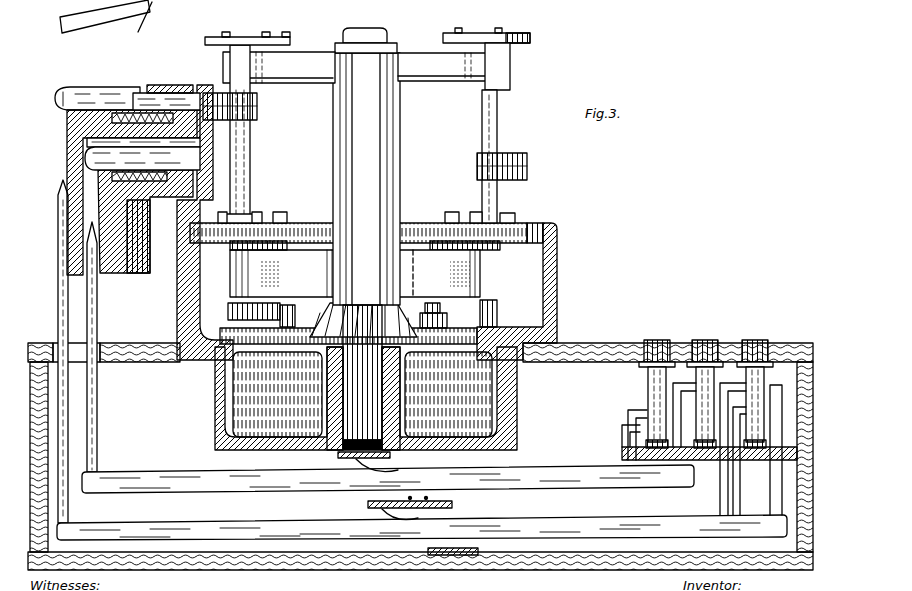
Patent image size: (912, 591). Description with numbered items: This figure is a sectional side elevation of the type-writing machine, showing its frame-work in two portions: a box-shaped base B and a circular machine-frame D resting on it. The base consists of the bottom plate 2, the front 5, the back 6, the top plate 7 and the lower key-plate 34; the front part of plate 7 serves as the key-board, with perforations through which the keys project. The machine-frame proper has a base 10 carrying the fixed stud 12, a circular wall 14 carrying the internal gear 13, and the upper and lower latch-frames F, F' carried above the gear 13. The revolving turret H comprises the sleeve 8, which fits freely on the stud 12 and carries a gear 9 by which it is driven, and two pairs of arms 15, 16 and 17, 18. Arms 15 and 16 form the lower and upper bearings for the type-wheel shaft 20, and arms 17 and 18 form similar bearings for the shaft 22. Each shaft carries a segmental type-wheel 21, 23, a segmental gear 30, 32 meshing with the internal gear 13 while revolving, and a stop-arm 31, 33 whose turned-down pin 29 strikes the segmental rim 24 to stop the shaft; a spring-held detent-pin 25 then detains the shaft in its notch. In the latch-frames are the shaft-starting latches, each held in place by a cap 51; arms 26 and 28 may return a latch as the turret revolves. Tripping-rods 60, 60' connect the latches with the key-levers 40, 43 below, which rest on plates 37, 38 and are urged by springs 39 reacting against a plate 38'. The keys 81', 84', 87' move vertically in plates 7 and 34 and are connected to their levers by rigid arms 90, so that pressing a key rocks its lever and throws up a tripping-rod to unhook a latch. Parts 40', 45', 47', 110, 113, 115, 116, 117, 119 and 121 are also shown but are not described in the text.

The bottom plate 2 is at (289, 567).
The front 5 is at (811, 505).
The back 6 is at (33, 461).
The top plate 7 is at (141, 363).
The sleeve 8 is at (396, 138).
The gear 9 is at (402, 347).
The base 10 is at (215, 425).
The fixed stud 12 is at (369, 28).
The internal gear 13 is at (543, 225).
The circular wall 14 is at (558, 275).
The arm 15 is at (310, 294).
The arm 16 is at (316, 75).
The arm 17 is at (411, 268).
The arm 18 is at (433, 60).
The type-wheel shaft 20 is at (250, 216).
The segmental type-wheel 21 is at (207, 36).
The type-wheel shaft 22 is at (473, 220).
The segmental type-wheel 23 is at (531, 38).
The segmental rim 24 is at (433, 324).
The detent-pin 25 is at (365, 268).
The arm 26 is at (248, 108).
The arm 28 is at (508, 153).
The pin 29 is at (361, 317).
The segmental gear 30 is at (283, 225).
The stop-arm 31 is at (253, 321).
The segmental gear 32 is at (507, 225).
The stop-arm 33 is at (490, 317).
The lower key-plate 34 is at (622, 457).
The plate 37 is at (436, 556).
The plate 38 is at (427, 504).
The plate 38' is at (339, 461).
The spring 39 is at (360, 462).
The key-lever 40 is at (388, 490).
The tab 40' is at (308, 20).
The key-lever 43 is at (214, 528).
The tab 45' is at (281, 20).
The tab 47' is at (242, 20).
The cap 51 is at (178, 85).
The tripping-rod 60 is at (48, 351).
The tripping-rod 60' is at (103, 347).
The key 81' is at (665, 381).
The key 84' is at (718, 379).
The key 87' is at (770, 383).
The rigid arm 90 is at (678, 398).
The link 110 is at (283, 212).
The link 113 is at (455, 222).
The packing 115 is at (283, 273).
The link 116 is at (482, 212).
The post 117 is at (246, 198).
The link 119 is at (525, 215).
The scale 121 is at (119, 14).
The base B is at (545, 426).
The machine-frame D is at (362, 394).
The latch-frame F is at (127, 168).
The latch-frame F' is at (138, 256).
The turret H is at (393, 183).